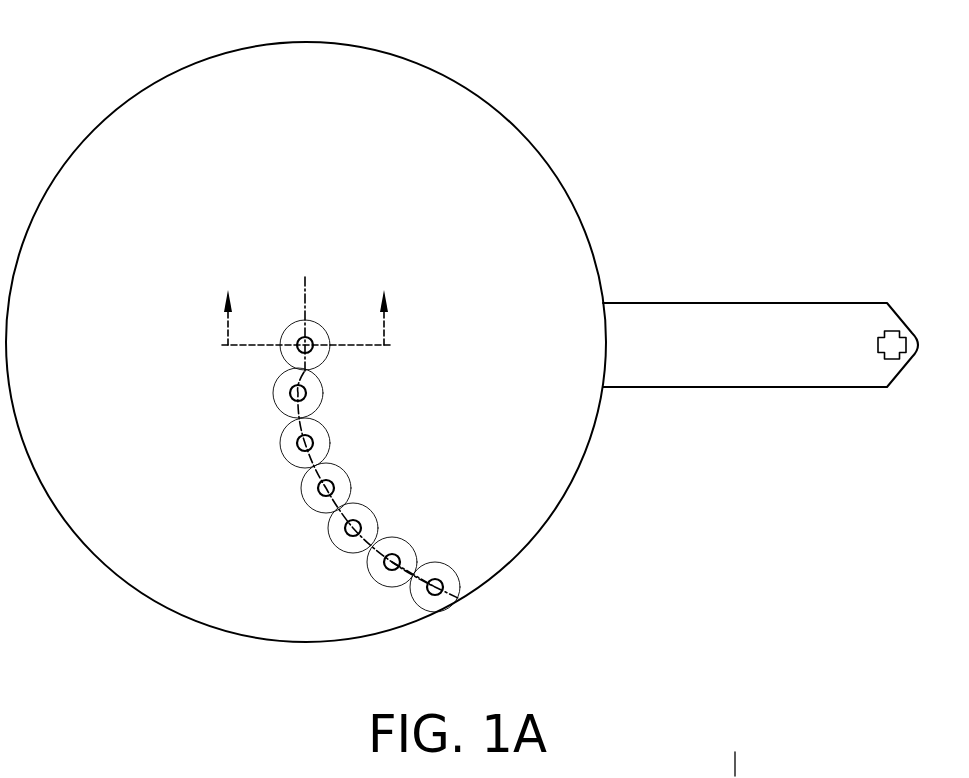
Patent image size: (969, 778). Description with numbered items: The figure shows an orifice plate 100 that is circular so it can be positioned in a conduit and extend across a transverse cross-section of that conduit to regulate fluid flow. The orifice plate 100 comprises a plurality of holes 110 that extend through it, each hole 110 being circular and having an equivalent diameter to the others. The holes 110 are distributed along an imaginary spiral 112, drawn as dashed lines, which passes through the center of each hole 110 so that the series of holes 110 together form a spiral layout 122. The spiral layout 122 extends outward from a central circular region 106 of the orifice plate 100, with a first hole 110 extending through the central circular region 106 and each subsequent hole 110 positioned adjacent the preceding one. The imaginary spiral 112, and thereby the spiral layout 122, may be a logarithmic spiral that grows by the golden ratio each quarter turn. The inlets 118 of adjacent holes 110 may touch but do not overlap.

The orifice plate 100 is at (103, 82).
The central circular region 106 is at (313, 318).
The holes 110 is at (297, 320).
The imaginary spiral 112 is at (335, 467).
The inlets 118 is at (330, 336).
The spiral layout 122 is at (389, 540).